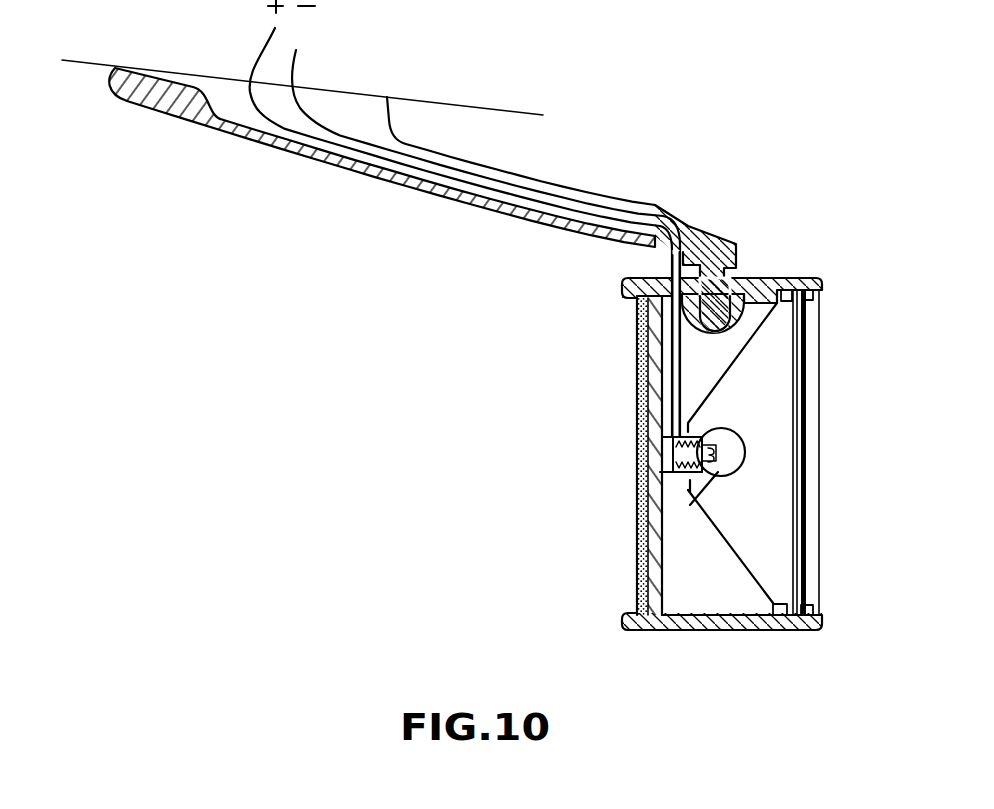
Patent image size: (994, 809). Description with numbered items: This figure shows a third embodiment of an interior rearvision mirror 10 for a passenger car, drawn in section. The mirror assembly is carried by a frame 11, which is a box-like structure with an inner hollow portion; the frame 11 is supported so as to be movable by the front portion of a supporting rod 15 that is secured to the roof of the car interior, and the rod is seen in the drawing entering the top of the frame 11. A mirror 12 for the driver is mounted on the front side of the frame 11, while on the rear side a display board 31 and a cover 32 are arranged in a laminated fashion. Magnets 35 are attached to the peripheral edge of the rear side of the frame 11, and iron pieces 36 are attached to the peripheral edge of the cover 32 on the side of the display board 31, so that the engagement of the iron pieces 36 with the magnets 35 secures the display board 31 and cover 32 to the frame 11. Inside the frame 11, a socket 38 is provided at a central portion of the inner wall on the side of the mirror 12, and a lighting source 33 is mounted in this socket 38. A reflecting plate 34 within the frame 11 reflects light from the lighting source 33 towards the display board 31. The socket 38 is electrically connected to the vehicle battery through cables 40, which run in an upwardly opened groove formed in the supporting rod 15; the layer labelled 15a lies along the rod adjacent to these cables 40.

The interior rearvision mirror 10 is at (660, 644).
The frame 11 is at (757, 281).
The mirror 12 is at (637, 377).
The supporting rod 15 is at (357, 171).
The lead strip on support arm 15a is at (564, 192).
The display board 31 is at (805, 350).
The cover 32 is at (813, 453).
The lighting source 33 is at (660, 528).
The reflecting plate 34 is at (753, 571).
The magnets 35 is at (788, 291).
The iron pieces 36 is at (820, 297).
The socket 38 is at (637, 495).
The cables 40 is at (680, 385).